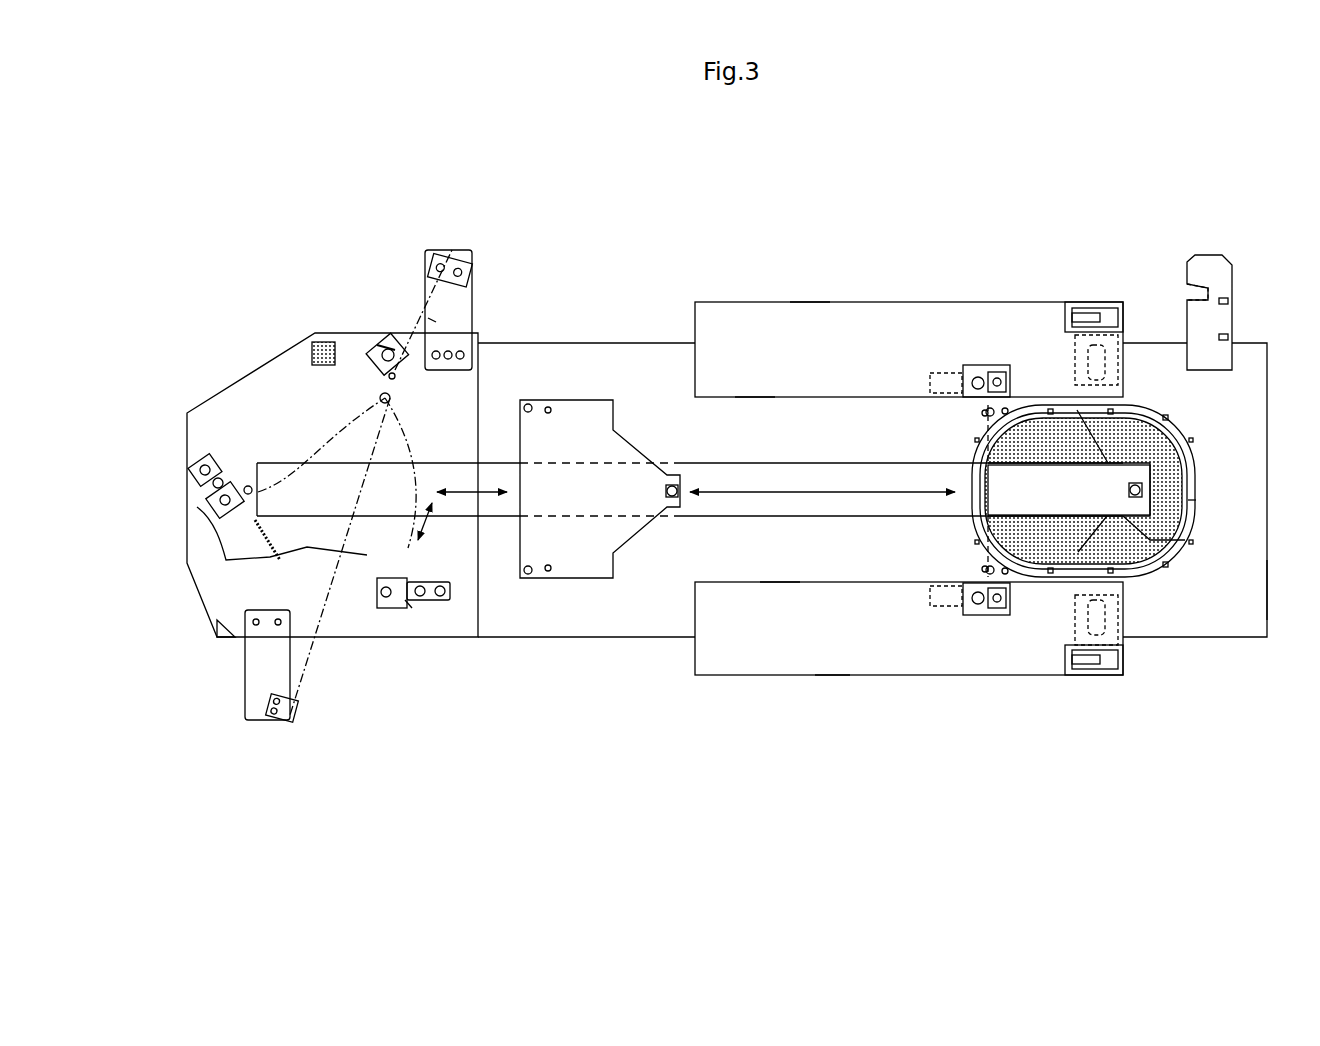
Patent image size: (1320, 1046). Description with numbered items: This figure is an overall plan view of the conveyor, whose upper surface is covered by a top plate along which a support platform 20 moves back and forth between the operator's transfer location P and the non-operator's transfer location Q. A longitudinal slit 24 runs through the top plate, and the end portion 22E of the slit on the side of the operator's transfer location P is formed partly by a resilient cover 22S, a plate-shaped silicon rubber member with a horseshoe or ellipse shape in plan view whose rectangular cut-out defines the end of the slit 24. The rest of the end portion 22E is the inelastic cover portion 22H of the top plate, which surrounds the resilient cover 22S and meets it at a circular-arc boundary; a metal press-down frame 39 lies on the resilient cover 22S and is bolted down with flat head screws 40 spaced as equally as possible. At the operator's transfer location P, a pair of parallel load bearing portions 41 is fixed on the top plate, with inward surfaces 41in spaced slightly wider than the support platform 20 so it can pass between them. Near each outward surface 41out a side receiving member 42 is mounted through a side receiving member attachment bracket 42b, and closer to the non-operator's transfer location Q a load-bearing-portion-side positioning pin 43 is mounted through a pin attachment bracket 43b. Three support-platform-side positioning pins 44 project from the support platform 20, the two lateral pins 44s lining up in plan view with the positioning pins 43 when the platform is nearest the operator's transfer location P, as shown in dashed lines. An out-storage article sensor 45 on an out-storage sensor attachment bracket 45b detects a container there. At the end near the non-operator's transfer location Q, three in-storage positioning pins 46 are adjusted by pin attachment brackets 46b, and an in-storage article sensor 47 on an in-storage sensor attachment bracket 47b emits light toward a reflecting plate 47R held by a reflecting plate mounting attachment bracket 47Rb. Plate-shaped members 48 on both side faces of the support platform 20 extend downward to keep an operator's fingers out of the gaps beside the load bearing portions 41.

The support platform 20 is at (295, 448).
The end portion of the slit 22E is at (1185, 548).
The resilient cover 22S is at (1186, 521).
The inelastic cover portion 22H is at (1232, 580).
The slit 24 is at (735, 515).
The press-down frame 39 is at (1135, 416).
The flat head screws 40 is at (1182, 436).
The load bearing portion 41 is at (730, 330).
The inward surface of load bearing portion 41in is at (752, 398).
The outward surface of load bearing portion 41out is at (810, 302).
The side receiving member 42 is at (1085, 303).
The side receiving member attachment bracket 42b is at (1075, 362).
The load-bearing-portion-side positioning pin 43 is at (972, 385).
The pin attachment bracket 43b is at (928, 380).
The support-platform-side positioning pin 44 is at (665, 491).
The lateral pin 44s is at (330, 432).
The out-storage article sensor 45 is at (1190, 258).
The out-storage sensor attachment bracket 45b is at (1232, 287).
The in-storage positioning pin 46 is at (195, 455).
The pin attachment bracket 46b is at (377, 345).
The in-storage article sensor 47 is at (292, 715).
The in-storage sensor attachment bracket 47b is at (250, 668).
The reflecting plate 47R is at (447, 248).
The reflecting plate mounting attachment bracket 47Rb is at (428, 300).
The plate-shaped member 48 is at (578, 400).
The operator's transfer location P is at (1198, 742).
The non-operator's transfer location Q is at (375, 675).